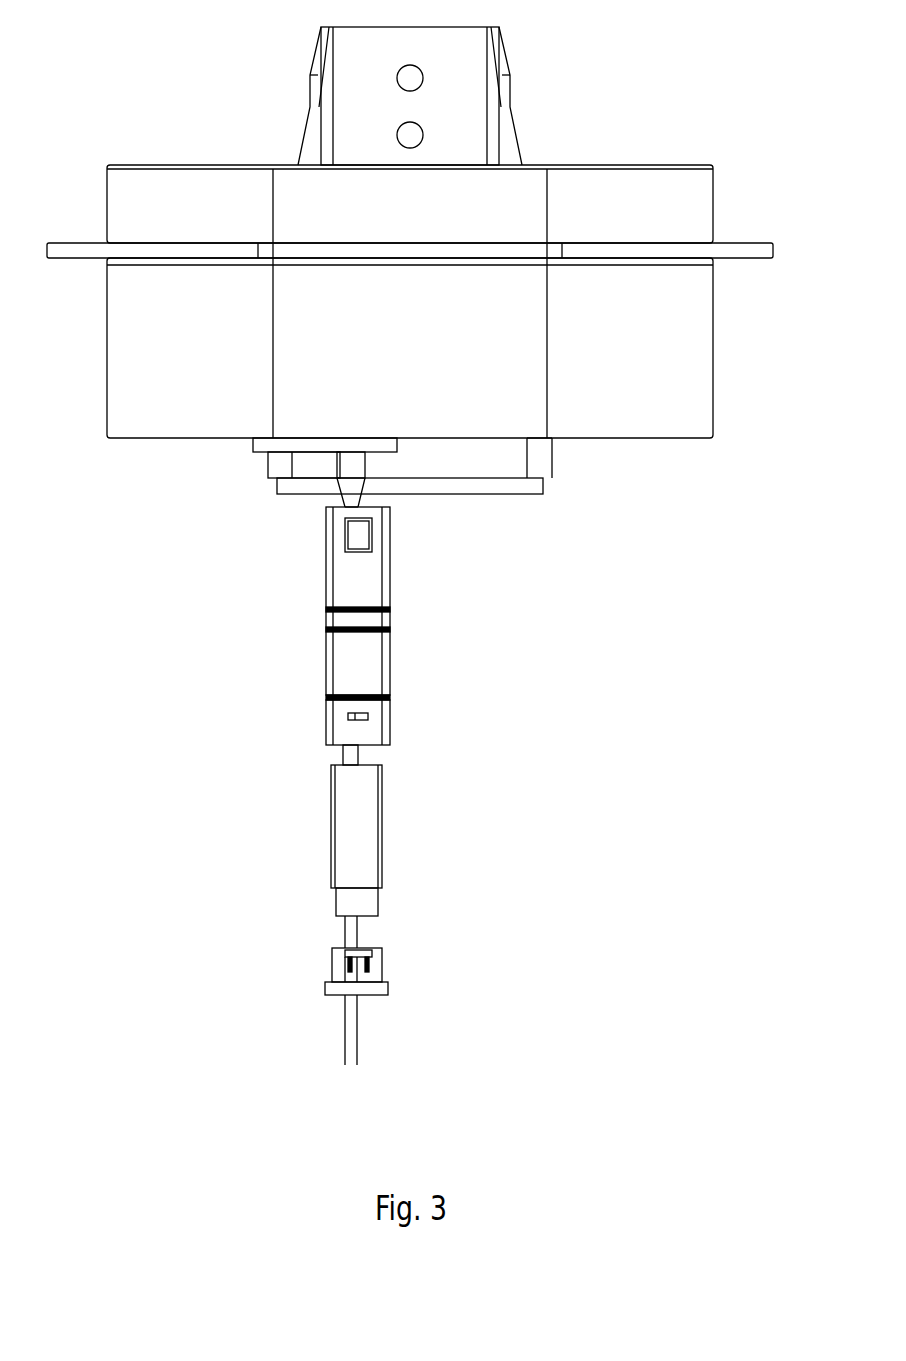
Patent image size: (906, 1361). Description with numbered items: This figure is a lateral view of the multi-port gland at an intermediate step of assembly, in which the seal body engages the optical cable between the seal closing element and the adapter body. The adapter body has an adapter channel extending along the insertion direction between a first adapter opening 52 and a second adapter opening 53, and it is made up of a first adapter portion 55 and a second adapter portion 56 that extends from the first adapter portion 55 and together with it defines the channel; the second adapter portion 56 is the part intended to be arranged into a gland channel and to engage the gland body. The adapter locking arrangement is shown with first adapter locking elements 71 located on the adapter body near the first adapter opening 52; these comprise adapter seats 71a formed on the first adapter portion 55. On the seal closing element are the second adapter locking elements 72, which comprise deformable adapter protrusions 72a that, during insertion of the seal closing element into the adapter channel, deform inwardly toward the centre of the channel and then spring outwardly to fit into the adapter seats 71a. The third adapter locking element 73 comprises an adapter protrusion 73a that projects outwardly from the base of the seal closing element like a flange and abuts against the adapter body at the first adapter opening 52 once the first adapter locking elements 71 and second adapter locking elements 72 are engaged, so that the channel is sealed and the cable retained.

The first adapter opening 52 is at (382, 747).
The second adapter opening 53 is at (387, 508).
The first adapter portion 55 is at (318, 717).
The second adapter portion 56 is at (318, 569).
The first adapter locking elements 71 is at (398, 717).
The adapter seats 71a is at (350, 717).
The second adapter locking elements 72 is at (392, 957).
The deformable adapter protrusions 72a is at (348, 952).
The third adapter locking element 73 is at (404, 988).
The adapter protrusion 73a is at (357, 988).